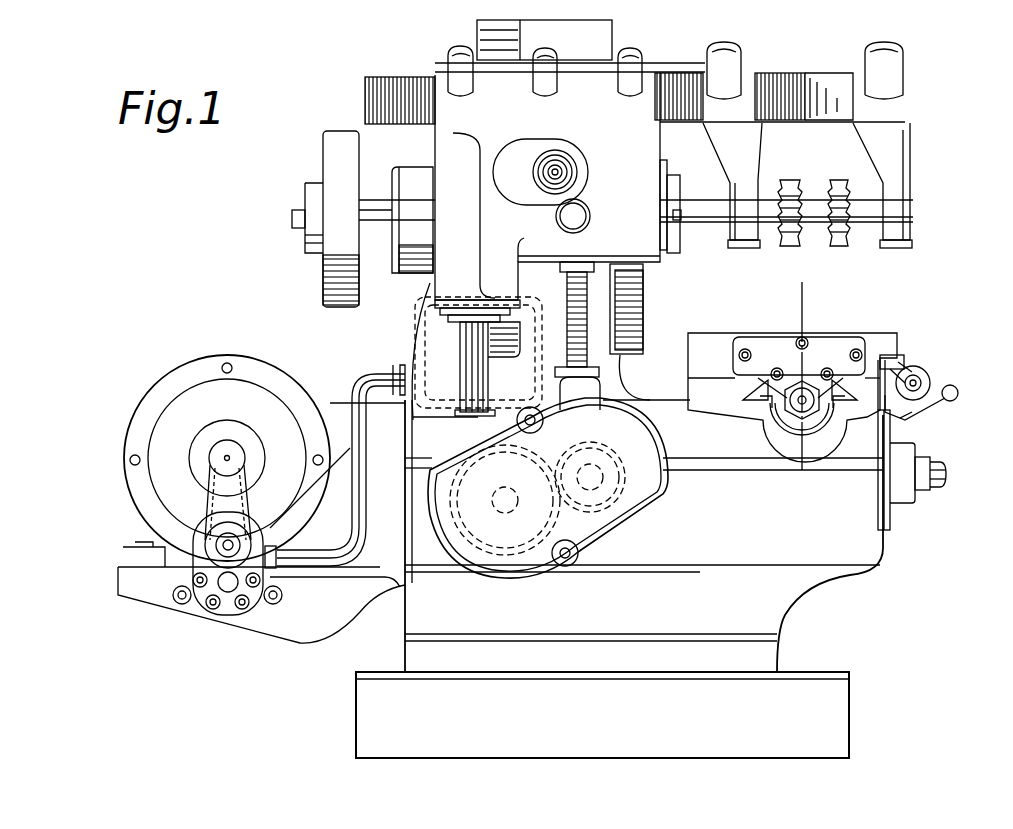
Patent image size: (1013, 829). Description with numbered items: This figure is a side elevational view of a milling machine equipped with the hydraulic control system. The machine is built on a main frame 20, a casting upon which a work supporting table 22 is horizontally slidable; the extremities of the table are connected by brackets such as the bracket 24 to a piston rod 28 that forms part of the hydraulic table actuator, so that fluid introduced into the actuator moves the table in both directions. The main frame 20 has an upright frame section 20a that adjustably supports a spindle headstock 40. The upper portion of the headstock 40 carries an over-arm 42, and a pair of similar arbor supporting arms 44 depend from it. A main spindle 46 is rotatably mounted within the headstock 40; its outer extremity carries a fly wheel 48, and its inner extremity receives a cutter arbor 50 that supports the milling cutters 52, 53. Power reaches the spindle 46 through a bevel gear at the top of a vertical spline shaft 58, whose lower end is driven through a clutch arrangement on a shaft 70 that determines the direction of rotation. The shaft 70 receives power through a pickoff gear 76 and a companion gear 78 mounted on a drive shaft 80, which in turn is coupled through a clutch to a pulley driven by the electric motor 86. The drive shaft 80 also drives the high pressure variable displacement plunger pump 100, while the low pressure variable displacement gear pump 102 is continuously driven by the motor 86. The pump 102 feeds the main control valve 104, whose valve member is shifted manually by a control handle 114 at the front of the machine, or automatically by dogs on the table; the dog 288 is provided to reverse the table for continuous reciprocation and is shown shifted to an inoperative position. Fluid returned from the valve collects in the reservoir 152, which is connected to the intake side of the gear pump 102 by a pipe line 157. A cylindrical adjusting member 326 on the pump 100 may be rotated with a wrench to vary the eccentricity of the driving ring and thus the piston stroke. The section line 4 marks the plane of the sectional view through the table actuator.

The main frame 20 is at (855, 580).
The upright frame section 20a is at (640, 294).
The work supporting table 22 is at (723, 333).
The bracket 24 is at (777, 385).
The piston rod 28 is at (800, 402).
The section line 4- 4 is at (782, 305).
The spindle headstock 40 is at (430, 63).
The over-arm 42 is at (810, 85).
The arbor supporting arms 44 is at (747, 145).
The main spindle 46 is at (373, 205).
The fly wheel 48 is at (337, 167).
The cutter arbor 50 is at (695, 210).
The milling cutter 52 is at (840, 184).
The milling cutter 53 is at (790, 184).
The vertical spline shaft 58 is at (465, 342).
The shaft 70 is at (500, 505).
The pickoff gear 76 is at (503, 552).
The companion gear 78 is at (610, 505).
The drive shaft 80 is at (600, 478).
The electric motor 86 is at (162, 398).
The high pressure variable displacement plunger pump 100 is at (920, 443).
The low pressure variable displacement gear pump 102 is at (218, 603).
The main control valve 104 is at (928, 370).
The control handle 114 is at (958, 391).
The reservoir 152 is at (415, 346).
The pipe line 157 is at (352, 533).
The dog 288 is at (912, 378).
The cylindrical adjusting member 326 is at (946, 472).